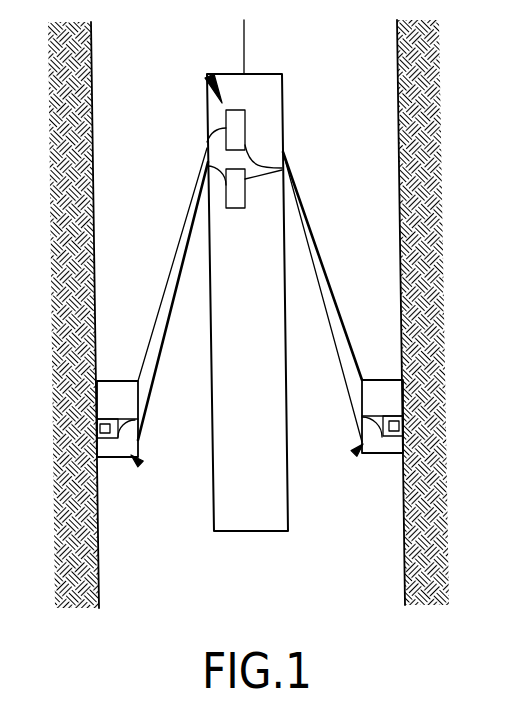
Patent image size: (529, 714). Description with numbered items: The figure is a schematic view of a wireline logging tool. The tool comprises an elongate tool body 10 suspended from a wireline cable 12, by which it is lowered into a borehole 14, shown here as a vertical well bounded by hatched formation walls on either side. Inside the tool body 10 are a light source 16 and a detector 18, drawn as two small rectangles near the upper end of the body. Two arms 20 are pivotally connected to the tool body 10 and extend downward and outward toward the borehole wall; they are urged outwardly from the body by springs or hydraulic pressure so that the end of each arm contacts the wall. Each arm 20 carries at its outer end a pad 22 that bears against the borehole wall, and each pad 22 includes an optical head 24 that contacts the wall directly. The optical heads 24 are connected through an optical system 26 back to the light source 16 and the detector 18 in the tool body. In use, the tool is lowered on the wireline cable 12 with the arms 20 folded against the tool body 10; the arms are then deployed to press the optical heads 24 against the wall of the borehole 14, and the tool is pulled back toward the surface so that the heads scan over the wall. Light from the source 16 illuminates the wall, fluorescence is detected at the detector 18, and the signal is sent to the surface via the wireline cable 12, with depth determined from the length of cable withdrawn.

The tool body 10 is at (264, 430).
The wireline cable 12 is at (245, 40).
The borehole 14 is at (248, 314).
The light source 16 is at (236, 130).
The detector 18 is at (240, 200).
The arms 20 is at (165, 298).
The pad 22 is at (108, 381).
The optical head 24 is at (97, 420).
The optical system 26 is at (210, 76).